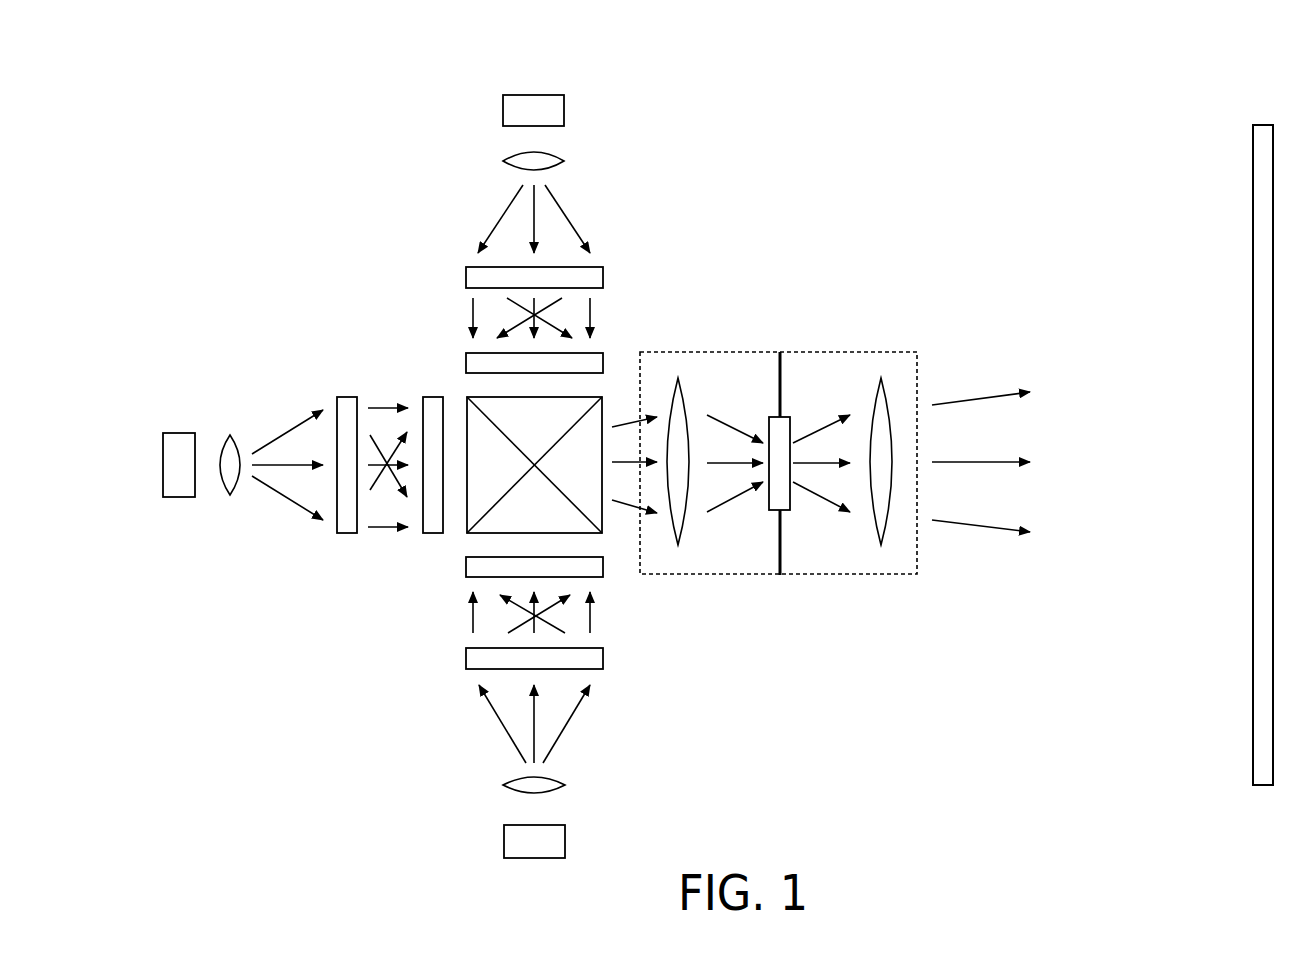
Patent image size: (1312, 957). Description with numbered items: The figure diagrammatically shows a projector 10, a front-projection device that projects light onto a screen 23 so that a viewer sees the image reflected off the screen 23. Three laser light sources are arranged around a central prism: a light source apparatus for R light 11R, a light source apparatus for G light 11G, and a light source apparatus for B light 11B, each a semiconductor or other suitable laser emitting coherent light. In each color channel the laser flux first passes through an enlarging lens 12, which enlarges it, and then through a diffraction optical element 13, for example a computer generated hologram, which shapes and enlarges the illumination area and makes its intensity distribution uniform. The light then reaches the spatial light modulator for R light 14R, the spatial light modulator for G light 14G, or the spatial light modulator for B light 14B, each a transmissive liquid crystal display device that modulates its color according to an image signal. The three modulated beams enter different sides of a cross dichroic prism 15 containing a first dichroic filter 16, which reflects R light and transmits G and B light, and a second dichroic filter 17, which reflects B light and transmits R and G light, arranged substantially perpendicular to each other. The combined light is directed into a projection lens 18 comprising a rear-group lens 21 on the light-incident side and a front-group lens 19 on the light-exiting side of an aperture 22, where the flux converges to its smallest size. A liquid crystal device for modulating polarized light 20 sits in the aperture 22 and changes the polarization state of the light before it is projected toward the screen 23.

The projector 10 is at (286, 96).
The light source apparatus for R light 11R is at (557, 108).
The light source apparatus for G light 11G is at (180, 440).
The light source apparatus for B light 11B is at (508, 840).
The enlarging lens 12 is at (548, 160).
The diffraction optical element 13 is at (598, 280).
The spatial light modulator for R light 14R is at (598, 362).
The spatial light modulator for G light 14G is at (432, 400).
The spatial light modulator for B light 14B is at (470, 566).
The cross dichroic prism 15 is at (470, 400).
The first dichroic filter 16 is at (590, 513).
The second dichroic filter 17 is at (586, 406).
The projection lens 18 is at (883, 576).
The front-group lens 19 is at (887, 407).
The liquid crystal device for modulating polarized light 20 is at (792, 425).
The rear-group lens 21 is at (684, 410).
The aperture 22 is at (780, 576).
The screen 23 is at (1263, 125).